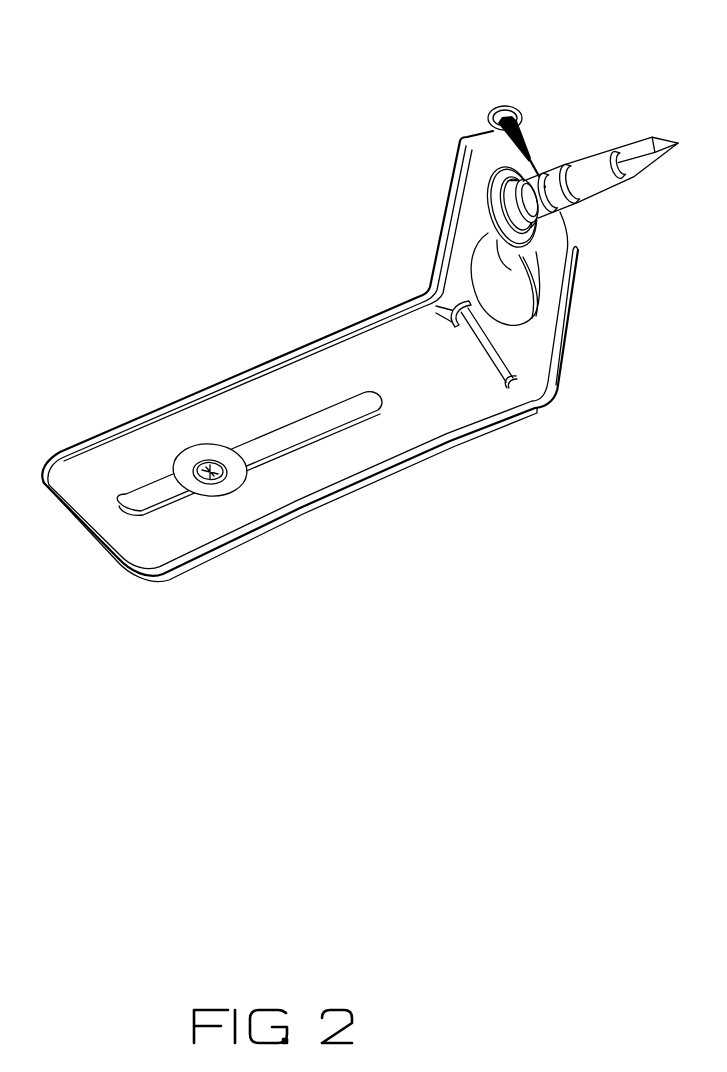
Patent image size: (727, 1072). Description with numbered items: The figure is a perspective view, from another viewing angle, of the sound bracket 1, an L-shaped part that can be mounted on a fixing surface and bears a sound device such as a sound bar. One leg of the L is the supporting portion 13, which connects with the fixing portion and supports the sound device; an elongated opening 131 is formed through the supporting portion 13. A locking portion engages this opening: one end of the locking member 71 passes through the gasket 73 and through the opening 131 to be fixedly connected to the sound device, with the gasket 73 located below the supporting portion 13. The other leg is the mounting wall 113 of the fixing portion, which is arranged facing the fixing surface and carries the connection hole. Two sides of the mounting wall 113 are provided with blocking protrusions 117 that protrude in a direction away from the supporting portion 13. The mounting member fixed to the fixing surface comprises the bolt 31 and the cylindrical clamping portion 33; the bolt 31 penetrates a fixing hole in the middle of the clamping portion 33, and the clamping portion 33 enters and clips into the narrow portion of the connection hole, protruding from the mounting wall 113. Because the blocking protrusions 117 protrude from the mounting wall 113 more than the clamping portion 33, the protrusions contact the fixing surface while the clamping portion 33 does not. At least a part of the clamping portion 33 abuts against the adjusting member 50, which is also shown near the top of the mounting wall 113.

The sound bracket 1 is at (288, 48).
The supporting portion 13 is at (182, 537).
The opening 131 is at (310, 430).
The locking member 71 is at (212, 472).
The gasket 73 is at (192, 458).
The mounting wall 113 is at (552, 274).
The blocking protrusions 117 is at (577, 252).
The clamping portion 33 is at (500, 199).
The bolt 31 is at (593, 171).
The adjusting member 50 is at (494, 129).